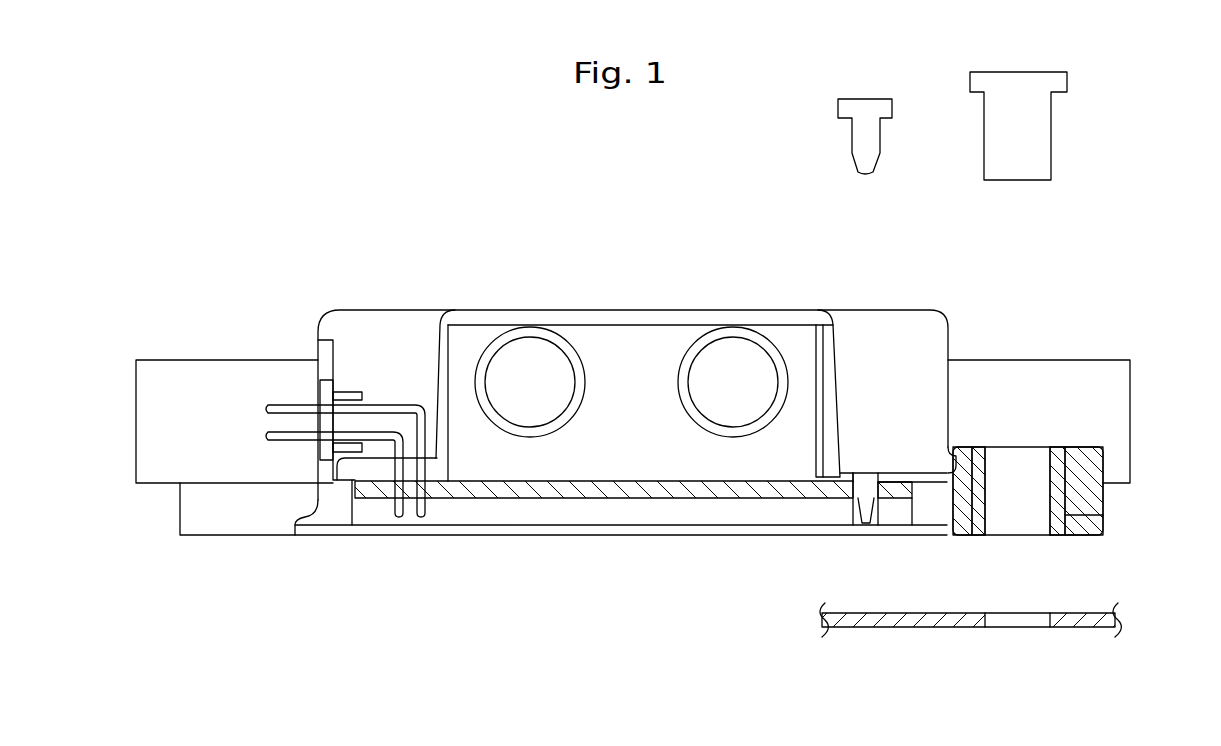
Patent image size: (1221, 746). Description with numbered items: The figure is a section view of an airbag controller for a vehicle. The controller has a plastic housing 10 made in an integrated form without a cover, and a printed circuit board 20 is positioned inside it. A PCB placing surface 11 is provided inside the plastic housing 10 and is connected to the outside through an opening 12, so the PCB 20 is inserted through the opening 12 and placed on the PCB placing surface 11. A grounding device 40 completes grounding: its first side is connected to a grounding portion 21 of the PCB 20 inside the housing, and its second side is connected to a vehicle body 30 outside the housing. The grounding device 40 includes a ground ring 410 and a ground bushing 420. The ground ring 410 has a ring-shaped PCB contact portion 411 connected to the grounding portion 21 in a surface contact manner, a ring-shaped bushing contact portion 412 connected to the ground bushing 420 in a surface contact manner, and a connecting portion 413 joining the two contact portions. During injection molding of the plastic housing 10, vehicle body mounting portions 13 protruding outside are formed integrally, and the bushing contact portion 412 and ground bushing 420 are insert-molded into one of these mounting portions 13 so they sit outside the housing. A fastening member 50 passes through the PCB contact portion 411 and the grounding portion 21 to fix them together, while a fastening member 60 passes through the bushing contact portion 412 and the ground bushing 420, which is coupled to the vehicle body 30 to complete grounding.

The plastic housing 10 is at (635, 310).
The PCB placing surface 11 is at (385, 487).
The opening 12 is at (556, 515).
The vehicle body mounting portion 13 is at (1092, 500).
The printed circuit board 20 is at (630, 486).
The grounding portion 21 is at (843, 494).
The vehicle body 30 is at (1083, 618).
The grounding device 40 is at (1075, 409).
The ground ring 410 is at (1018, 437).
The PCB contact portion 411 is at (843, 474).
The bushing contact portion 412 is at (1058, 456).
The connecting portion 413 is at (946, 466).
The ground bushing 420 is at (1063, 515).
The fastening member 50 is at (868, 98).
The fastening member 60 is at (1017, 72).